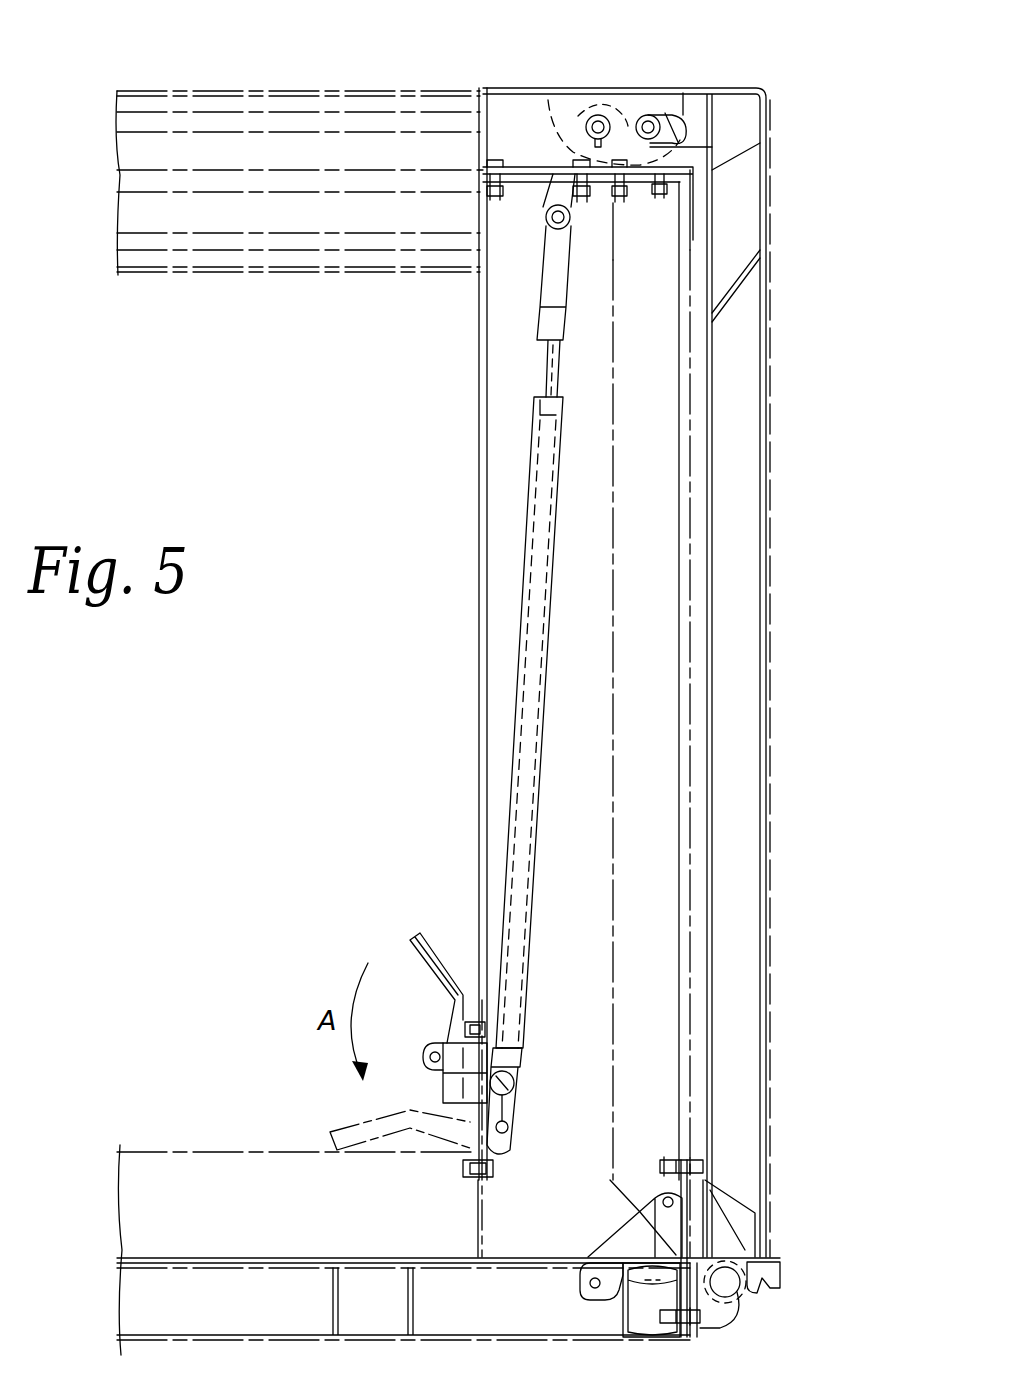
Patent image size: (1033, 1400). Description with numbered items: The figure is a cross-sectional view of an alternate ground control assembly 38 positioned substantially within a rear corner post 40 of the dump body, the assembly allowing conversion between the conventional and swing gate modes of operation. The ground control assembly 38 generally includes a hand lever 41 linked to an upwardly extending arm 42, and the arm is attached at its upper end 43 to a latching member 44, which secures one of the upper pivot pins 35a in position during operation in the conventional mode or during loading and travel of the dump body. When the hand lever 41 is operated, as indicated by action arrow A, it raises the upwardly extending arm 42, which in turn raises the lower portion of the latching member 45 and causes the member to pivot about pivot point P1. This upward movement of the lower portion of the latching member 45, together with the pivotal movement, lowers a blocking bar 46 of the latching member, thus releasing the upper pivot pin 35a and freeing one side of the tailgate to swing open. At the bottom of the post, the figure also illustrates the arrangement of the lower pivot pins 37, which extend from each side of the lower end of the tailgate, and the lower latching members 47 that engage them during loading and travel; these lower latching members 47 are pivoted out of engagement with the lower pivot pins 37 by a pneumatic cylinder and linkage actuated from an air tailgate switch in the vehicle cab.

The upper pivot pin 35a is at (651, 116).
The pivot point P1 is at (598, 117).
The lower pivot pin 37 is at (740, 1247).
The ground control assembly 38 is at (428, 809).
The rear corner post 40 is at (480, 467).
The hand lever 41 is at (415, 937).
The upwardly extending arm 42 is at (520, 652).
The upper end 43 is at (548, 288).
The latching member 44 is at (573, 148).
The lower portion of the latching member 45 is at (560, 197).
The blocking bar 46 is at (688, 112).
The lower latching member 47 is at (752, 1286).